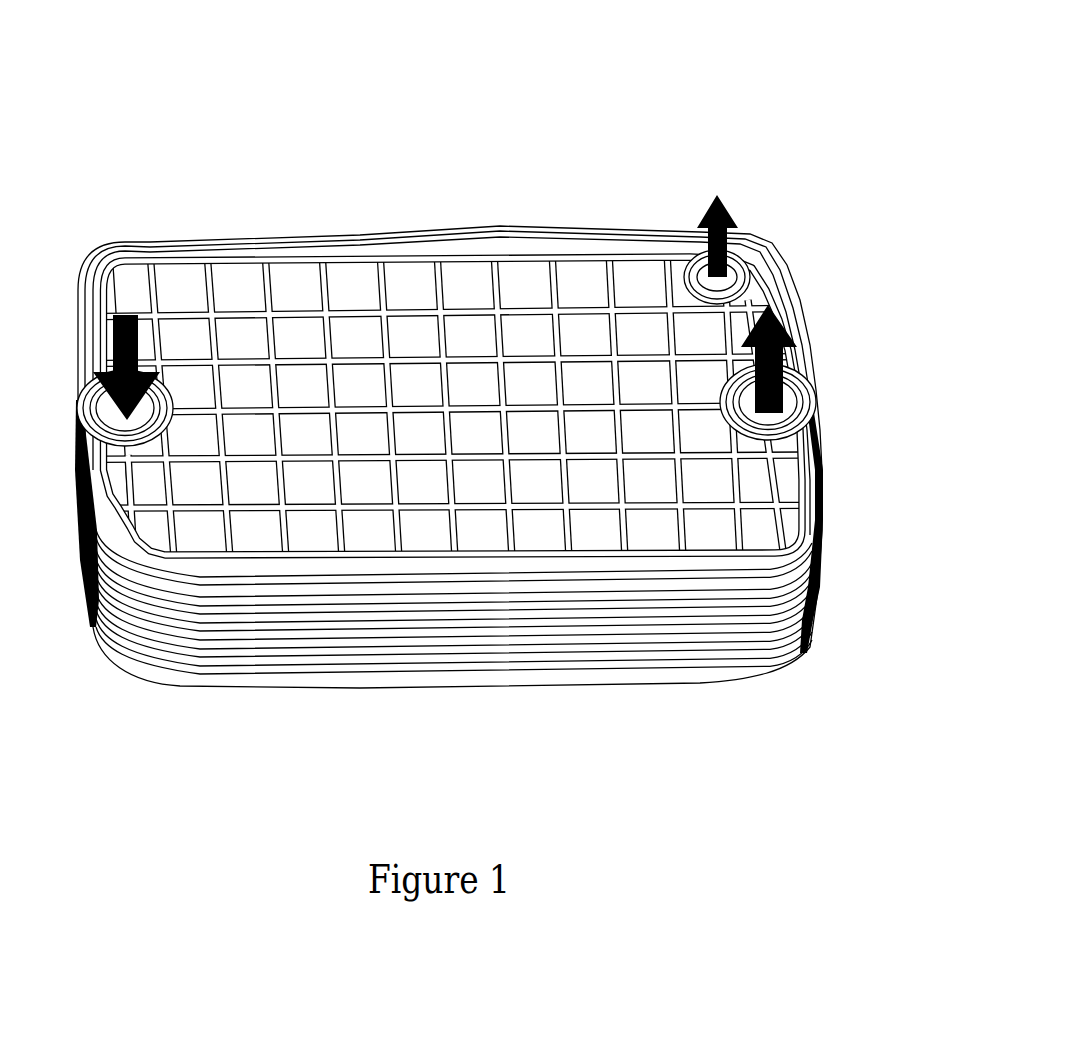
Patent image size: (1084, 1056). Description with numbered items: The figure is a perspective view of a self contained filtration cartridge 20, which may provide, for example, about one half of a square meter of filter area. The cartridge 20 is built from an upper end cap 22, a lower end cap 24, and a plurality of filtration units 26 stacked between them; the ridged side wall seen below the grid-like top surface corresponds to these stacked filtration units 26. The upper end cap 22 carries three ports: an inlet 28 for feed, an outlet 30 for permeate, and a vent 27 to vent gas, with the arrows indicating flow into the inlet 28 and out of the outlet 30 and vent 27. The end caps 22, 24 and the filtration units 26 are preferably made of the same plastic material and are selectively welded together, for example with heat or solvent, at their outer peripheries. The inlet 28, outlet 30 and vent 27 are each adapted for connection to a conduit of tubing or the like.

The self contained filtration cartridge 20 is at (686, 175).
The upper end cap 22 is at (513, 248).
The lower end cap 24 is at (630, 682).
The filtration units 26 is at (790, 600).
The vent 27 is at (745, 277).
The inlet 28 is at (82, 392).
The outlet 30 is at (788, 402).